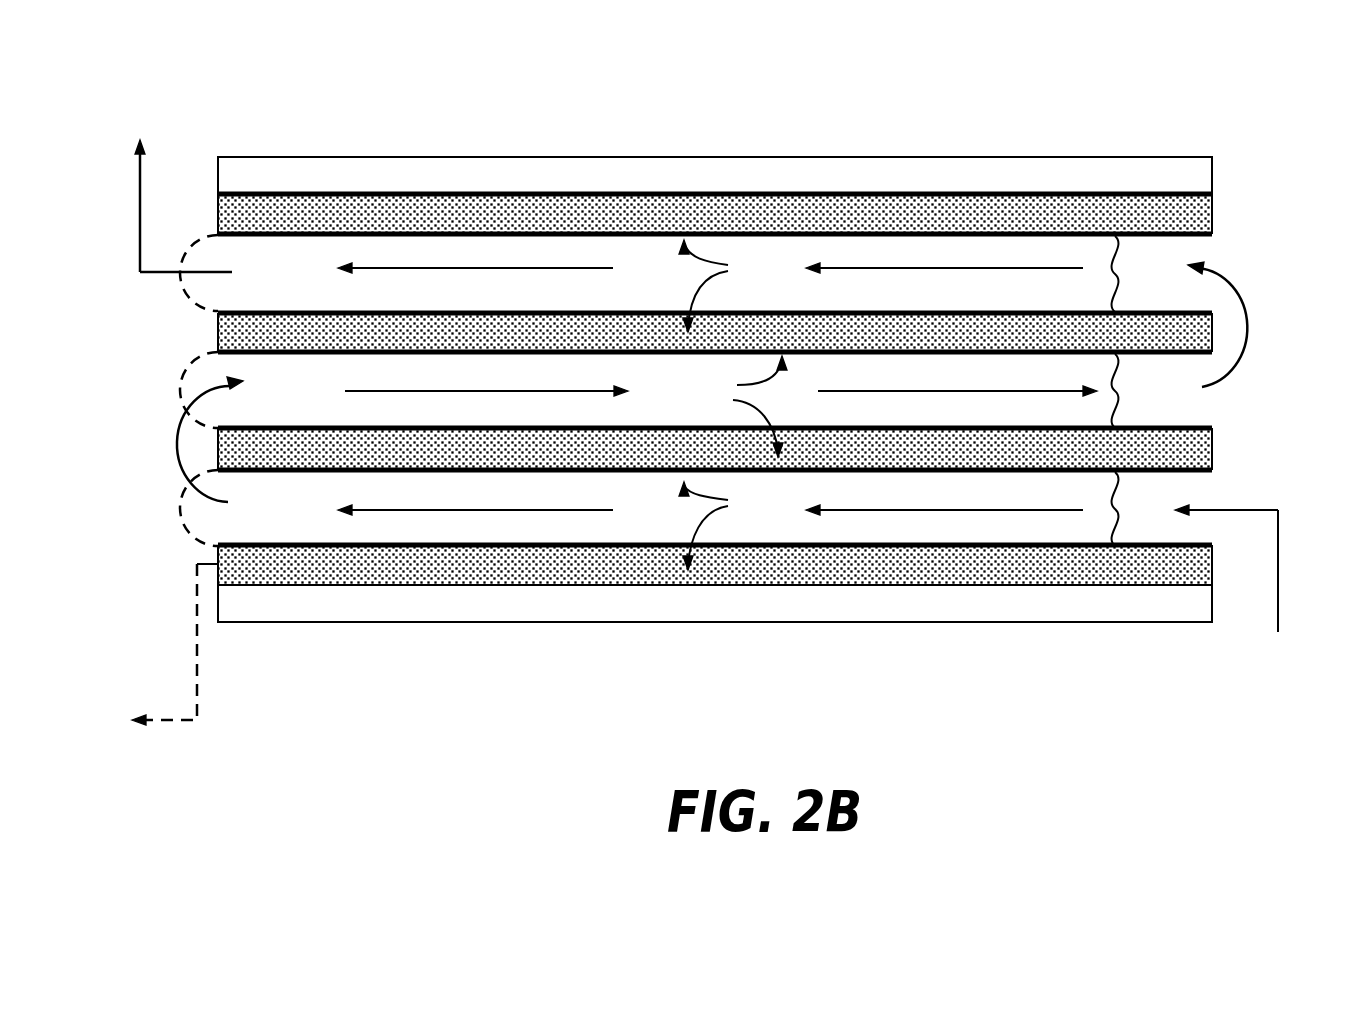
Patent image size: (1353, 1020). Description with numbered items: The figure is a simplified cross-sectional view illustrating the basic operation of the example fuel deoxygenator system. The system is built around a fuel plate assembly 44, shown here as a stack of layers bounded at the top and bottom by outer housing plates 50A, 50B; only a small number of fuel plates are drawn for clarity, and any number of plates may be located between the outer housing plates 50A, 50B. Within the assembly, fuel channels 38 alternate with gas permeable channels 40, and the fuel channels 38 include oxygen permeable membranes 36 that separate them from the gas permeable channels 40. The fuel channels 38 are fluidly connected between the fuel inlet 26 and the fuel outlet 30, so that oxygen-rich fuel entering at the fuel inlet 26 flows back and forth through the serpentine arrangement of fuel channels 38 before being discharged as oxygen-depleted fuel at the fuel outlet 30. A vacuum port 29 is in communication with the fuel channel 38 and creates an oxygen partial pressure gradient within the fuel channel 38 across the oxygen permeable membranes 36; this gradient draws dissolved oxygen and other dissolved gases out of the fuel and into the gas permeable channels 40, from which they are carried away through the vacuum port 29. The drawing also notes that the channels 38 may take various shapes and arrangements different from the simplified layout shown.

The fuel inlet 26 is at (1278, 545).
The vacuum port 29 is at (200, 662).
The fuel outlet 30 is at (140, 210).
The oxygen permeable membrane 36 is at (1131, 391).
The fuel channel 38 is at (286, 286).
The gas permeable channel 40 is at (436, 226).
The fuel plate assembly 44 is at (1250, 128).
The outer housing plate 50A is at (672, 170).
The outer housing plate 50B is at (775, 597).